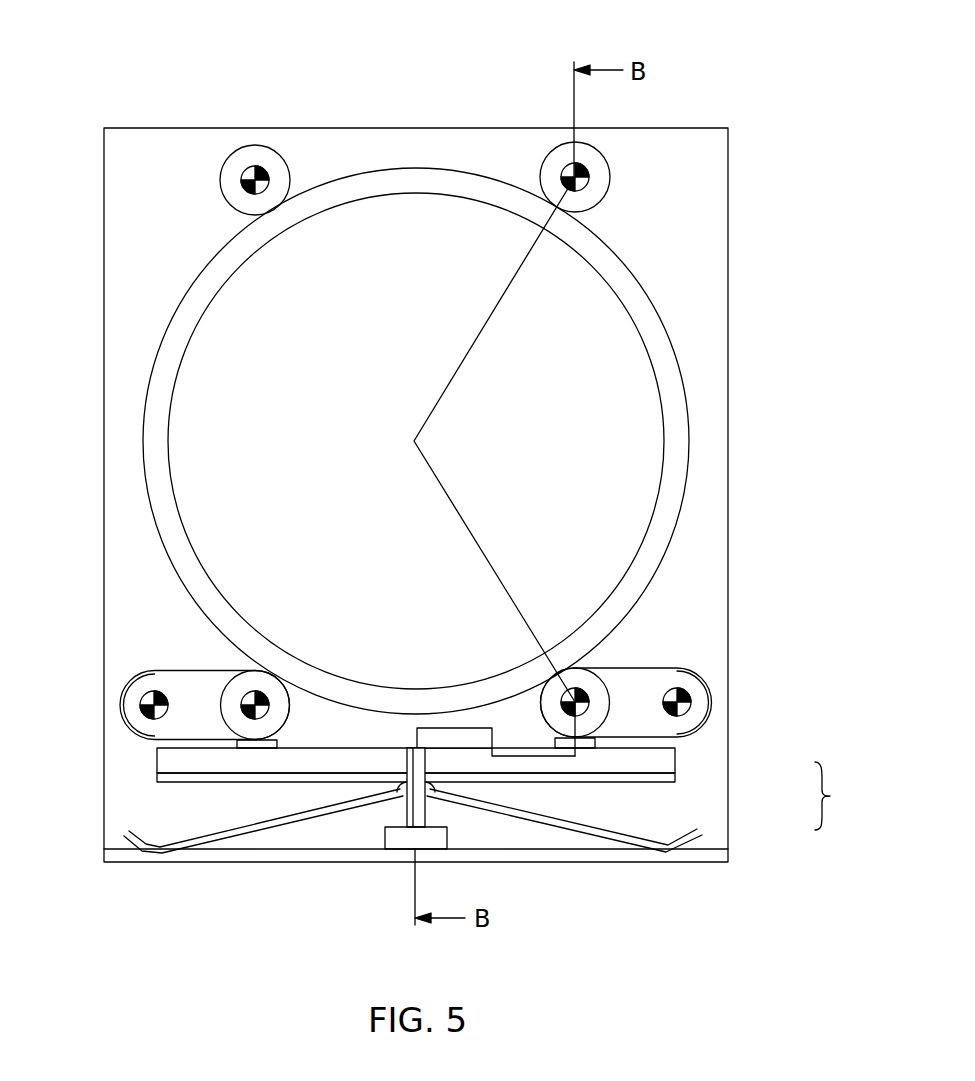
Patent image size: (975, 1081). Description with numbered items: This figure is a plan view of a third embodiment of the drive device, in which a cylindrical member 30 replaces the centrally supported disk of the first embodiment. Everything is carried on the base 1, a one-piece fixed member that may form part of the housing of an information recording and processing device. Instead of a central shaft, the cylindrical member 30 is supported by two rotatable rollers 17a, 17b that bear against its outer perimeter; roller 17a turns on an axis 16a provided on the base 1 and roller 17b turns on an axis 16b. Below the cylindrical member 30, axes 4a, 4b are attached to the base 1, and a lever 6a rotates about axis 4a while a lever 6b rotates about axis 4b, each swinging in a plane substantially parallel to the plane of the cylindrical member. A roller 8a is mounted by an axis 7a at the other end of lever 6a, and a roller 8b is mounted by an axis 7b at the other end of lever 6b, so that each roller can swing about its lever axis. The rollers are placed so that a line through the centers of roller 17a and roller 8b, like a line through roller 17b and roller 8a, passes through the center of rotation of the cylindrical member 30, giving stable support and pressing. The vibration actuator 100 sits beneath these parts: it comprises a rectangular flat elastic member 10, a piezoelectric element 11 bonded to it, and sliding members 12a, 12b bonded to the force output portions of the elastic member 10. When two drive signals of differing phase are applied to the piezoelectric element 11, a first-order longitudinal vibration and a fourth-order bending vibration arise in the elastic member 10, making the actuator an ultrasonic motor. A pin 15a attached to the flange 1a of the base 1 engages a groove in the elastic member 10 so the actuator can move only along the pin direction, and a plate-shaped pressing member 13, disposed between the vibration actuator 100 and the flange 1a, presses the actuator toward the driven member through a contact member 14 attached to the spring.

The base 1 is at (688, 216).
The flange 1a is at (707, 857).
The cylindrical member 30 is at (677, 405).
The axis 16a is at (590, 178).
The axis 16b is at (246, 172).
The roller 17a is at (590, 161).
The roller 17b is at (267, 160).
The roller 8a is at (577, 670).
The roller 8b is at (243, 676).
The axis 7a is at (580, 688).
The axis 7b is at (243, 697).
The lever 6a is at (690, 685).
The lever 6b is at (130, 700).
The axis 4a is at (691, 698).
The axis 4b is at (147, 713).
The sliding member 12a is at (583, 742).
The sliding member 12b is at (255, 748).
The elastic member 10 is at (653, 757).
The piezoelectric element 11 is at (630, 775).
The vibration actuator 100 is at (843, 796).
The pressing member 13 is at (343, 800).
The contact member 14 is at (427, 785).
The pin 15a is at (402, 833).